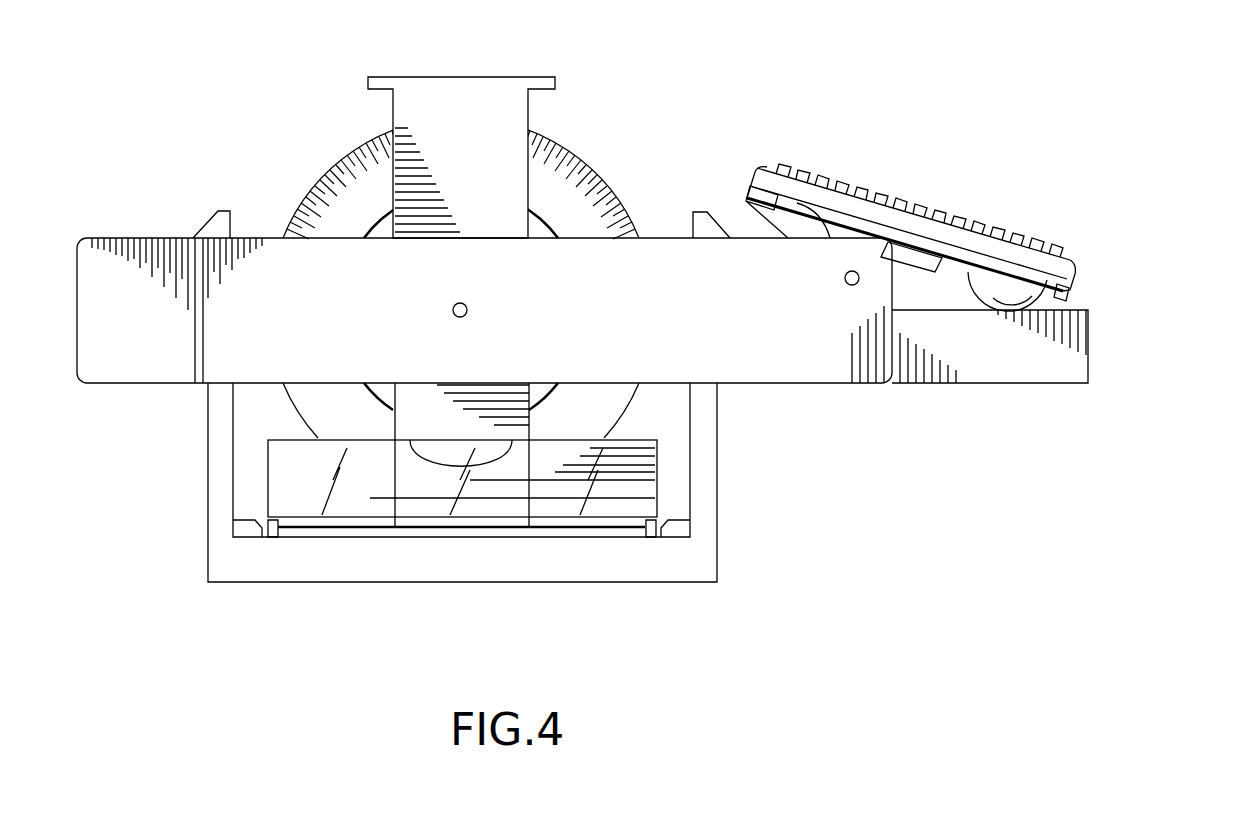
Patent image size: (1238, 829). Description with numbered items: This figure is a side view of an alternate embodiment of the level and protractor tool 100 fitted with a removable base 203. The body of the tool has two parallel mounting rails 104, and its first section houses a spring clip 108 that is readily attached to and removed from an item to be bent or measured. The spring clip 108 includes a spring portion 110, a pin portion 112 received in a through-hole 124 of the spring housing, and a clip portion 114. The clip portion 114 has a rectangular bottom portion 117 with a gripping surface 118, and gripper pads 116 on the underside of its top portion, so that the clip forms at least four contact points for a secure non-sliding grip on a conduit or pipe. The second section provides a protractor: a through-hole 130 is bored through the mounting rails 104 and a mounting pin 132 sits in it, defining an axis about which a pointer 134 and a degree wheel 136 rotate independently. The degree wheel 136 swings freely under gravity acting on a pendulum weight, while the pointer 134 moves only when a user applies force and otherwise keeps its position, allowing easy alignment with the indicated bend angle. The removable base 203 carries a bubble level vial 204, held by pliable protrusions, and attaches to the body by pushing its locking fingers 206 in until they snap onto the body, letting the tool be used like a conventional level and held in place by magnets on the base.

The level and protractor tool 100 is at (484, 348).
The mounting rails 104 is at (727, 372).
The spring clip 108 is at (901, 190).
The spring portion 110 is at (743, 200).
The pin portion 112 is at (853, 285).
The clip portion 114 is at (1048, 289).
The gripper pads 116 is at (1037, 292).
The bottom portion 117 is at (968, 362).
The gripping surface 118 is at (1048, 338).
The through-hole 124 is at (804, 319).
The through-hole 130 is at (467, 313).
The mounting pin 132 is at (508, 305).
The pointer 134 is at (493, 77).
The degree wheel 136 is at (563, 153).
The removable base 203 is at (652, 568).
The bubble level vial 204 is at (558, 517).
The locking fingers 206 is at (207, 222).